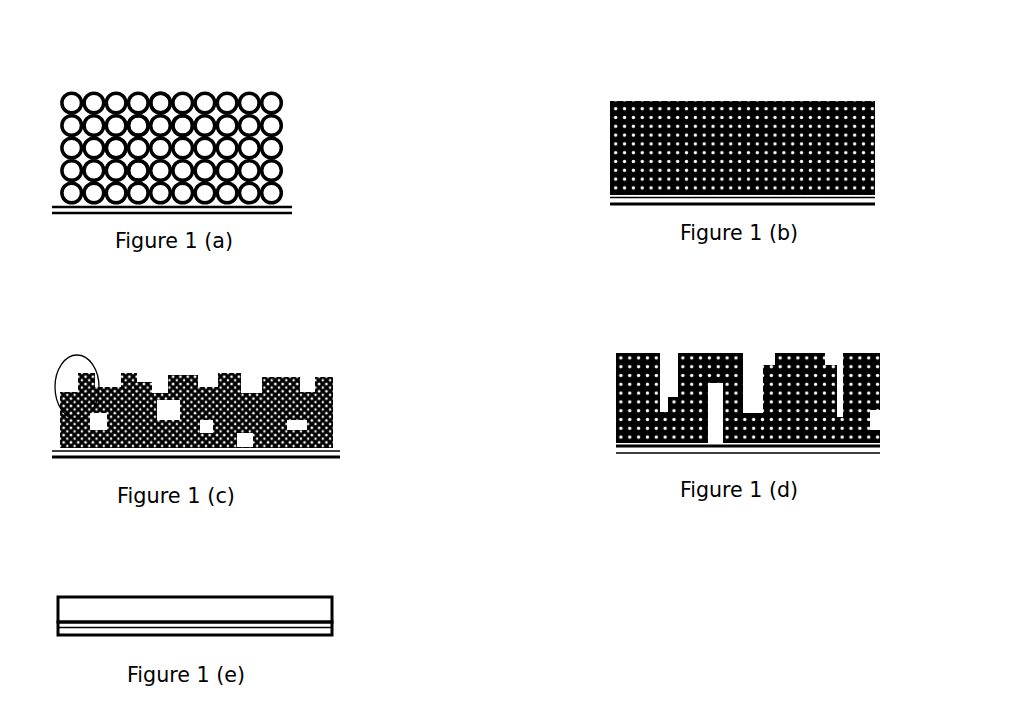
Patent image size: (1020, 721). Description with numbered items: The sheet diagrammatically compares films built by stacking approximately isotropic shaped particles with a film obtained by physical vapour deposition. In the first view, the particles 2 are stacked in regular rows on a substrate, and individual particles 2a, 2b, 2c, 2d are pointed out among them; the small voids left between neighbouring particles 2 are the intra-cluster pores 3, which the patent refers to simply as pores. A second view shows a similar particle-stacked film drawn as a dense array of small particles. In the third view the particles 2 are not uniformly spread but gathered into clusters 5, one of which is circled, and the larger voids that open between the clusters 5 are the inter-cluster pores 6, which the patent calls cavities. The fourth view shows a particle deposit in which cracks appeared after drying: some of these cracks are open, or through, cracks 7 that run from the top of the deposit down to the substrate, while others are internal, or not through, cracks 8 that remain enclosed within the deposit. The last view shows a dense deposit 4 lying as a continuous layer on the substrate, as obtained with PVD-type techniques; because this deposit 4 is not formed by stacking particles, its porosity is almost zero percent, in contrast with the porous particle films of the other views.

The particles 2 is at (155, 107).
The particle 2a is at (173, 120).
The particle 2b is at (140, 123).
The particle 2c is at (115, 150).
The particle 2d is at (140, 167).
The intra-cluster pores 3 is at (255, 138).
The dense deposit 4 is at (327, 603).
The clusters 5 is at (98, 362).
The inter-cluster pores 6 is at (292, 427).
The open cracks 7 is at (667, 368).
The internal cracks 8 is at (712, 425).